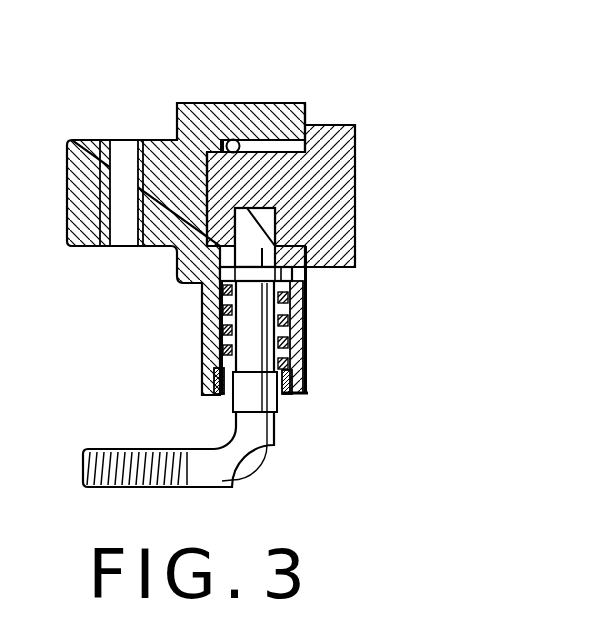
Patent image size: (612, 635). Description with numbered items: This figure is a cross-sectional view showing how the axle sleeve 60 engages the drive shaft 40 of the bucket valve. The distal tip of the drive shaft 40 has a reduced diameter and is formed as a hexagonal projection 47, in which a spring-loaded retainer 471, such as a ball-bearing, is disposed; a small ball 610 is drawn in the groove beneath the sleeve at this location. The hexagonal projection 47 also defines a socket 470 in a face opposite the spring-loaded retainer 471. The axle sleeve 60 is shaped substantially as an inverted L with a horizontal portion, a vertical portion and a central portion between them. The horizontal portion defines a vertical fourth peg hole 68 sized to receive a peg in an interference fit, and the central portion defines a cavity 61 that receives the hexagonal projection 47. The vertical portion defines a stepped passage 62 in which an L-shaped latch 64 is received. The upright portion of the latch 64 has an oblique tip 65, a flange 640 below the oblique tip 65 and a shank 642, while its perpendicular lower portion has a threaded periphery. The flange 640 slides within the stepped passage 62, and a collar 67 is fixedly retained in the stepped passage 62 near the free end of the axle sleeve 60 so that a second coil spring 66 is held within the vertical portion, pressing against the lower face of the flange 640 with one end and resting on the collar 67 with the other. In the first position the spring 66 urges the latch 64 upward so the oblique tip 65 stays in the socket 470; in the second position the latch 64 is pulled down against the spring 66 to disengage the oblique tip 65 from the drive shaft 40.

The drive shaft 40 is at (338, 137).
The hexagonal projection 47 is at (274, 170).
The socket 470 is at (264, 222).
The spring-loaded retainer 471 is at (243, 142).
The axle sleeve 60 is at (204, 110).
The ball 610 is at (235, 138).
The cavity 61 is at (310, 270).
The stepped passage 62 is at (292, 303).
The L-shaped latch 64 is at (266, 466).
The flange 640 is at (256, 275).
The shank 642 is at (230, 404).
The oblique tip 65 is at (247, 243).
The second coil spring 66 is at (299, 343).
The collar 67 is at (298, 393).
The fourth peg hole 68 is at (122, 230).